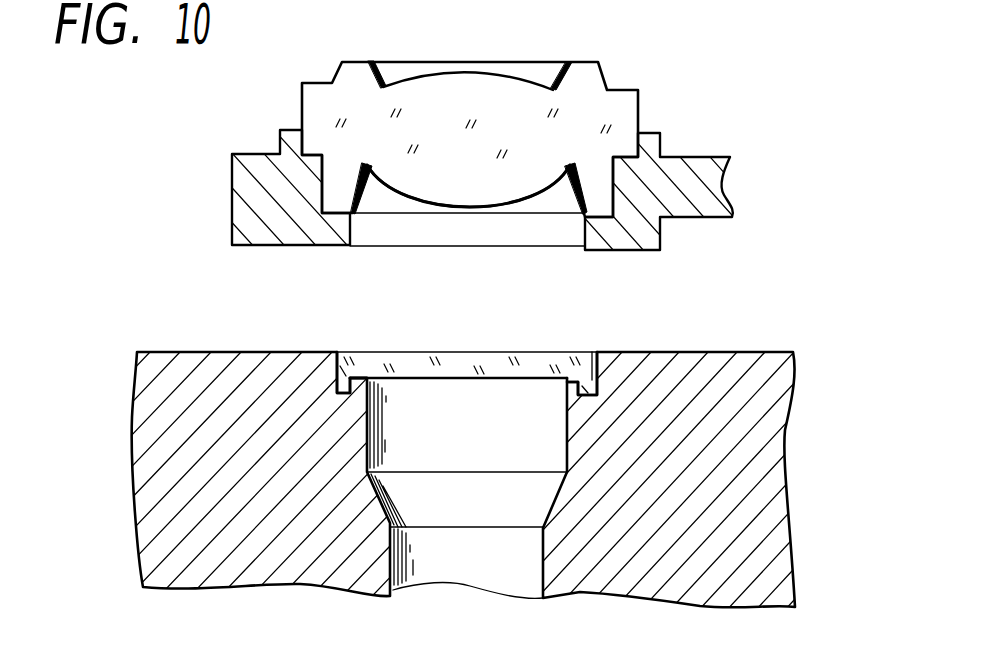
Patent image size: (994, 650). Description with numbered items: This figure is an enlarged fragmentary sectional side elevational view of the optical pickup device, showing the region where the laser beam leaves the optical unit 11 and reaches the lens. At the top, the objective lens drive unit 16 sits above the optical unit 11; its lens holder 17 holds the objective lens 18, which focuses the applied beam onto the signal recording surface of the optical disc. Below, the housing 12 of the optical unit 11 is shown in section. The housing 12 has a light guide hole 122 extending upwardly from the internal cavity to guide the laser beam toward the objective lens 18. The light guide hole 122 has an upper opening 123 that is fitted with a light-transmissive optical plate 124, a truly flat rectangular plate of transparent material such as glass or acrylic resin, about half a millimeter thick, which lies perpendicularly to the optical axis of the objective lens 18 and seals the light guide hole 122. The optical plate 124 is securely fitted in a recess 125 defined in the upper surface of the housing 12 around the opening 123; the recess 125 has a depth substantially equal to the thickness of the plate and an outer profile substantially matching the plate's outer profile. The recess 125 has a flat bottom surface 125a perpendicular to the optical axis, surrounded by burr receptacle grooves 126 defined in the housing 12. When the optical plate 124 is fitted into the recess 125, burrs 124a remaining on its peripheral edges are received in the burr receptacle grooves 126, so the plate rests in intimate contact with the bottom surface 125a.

The optical unit 11 is at (762, 340).
The housing 12 is at (760, 480).
The objective lens drive unit 16 is at (210, 164).
The lens holder 17 is at (260, 157).
The objective lens 18 is at (487, 88).
The light guide hole 122 is at (540, 565).
The upper opening 123 is at (566, 380).
The light-transmissive optical plate 124 is at (474, 352).
The burrs 124a is at (351, 389).
The recess 125 is at (340, 353).
The flat bottom surface 125a is at (360, 378).
The burr receptacle grooves 126 is at (590, 390).